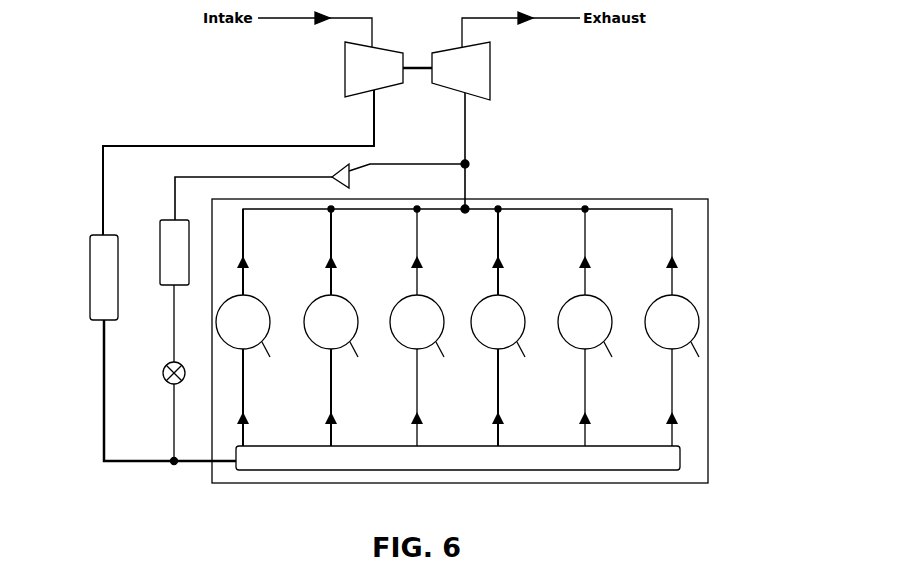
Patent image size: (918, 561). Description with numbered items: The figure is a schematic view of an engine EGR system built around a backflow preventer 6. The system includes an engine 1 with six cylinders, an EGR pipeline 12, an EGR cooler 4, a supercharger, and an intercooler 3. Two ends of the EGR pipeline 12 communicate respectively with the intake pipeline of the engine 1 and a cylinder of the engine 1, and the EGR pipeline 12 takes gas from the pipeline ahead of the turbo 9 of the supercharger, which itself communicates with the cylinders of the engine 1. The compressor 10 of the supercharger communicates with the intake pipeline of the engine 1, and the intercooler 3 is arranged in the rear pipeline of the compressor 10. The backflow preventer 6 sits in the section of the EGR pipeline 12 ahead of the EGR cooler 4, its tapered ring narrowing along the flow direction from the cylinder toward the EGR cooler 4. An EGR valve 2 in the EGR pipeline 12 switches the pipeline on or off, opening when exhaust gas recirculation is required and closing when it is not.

The engine 1 is at (708, 285).
The EGR valve 2 is at (163, 368).
The intercooler 3 is at (110, 275).
The EGR cooler 4 is at (174, 232).
The backflow preventer 6 is at (330, 172).
The turbo 9 is at (485, 68).
The compressor 10 is at (355, 70).
The EGR pipeline 12 is at (235, 176).